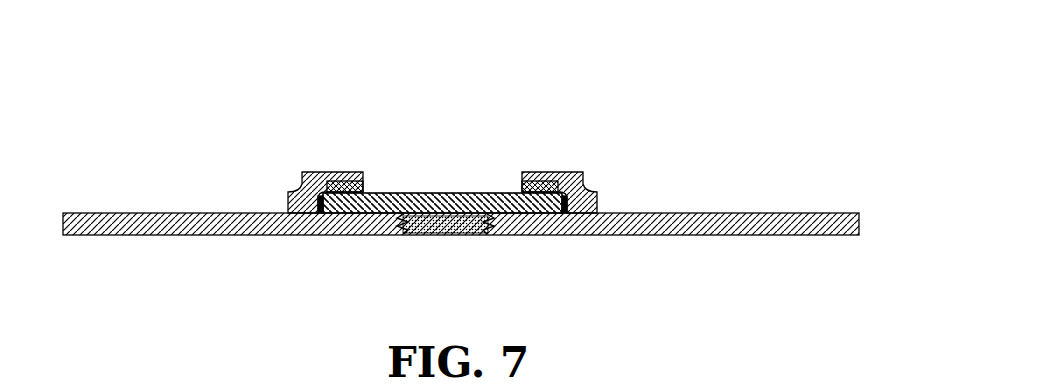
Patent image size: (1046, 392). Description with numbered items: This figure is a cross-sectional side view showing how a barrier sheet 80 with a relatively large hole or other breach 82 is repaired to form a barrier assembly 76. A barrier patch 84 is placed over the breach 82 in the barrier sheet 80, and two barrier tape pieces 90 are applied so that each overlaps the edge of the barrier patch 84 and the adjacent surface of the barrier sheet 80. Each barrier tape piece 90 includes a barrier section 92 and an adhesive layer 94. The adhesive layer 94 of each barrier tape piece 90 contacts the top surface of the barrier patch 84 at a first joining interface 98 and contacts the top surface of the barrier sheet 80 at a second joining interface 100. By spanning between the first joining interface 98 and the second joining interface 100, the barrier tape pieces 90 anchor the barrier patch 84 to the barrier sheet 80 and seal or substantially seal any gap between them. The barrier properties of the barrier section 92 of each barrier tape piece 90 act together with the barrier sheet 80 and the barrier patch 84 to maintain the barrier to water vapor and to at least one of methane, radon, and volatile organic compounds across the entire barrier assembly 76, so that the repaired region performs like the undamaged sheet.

The barrier assembly 76 is at (728, 87).
The barrier sheet 80 is at (187, 222).
The hole or other breach 82 is at (443, 227).
The barrier patch 84 is at (462, 190).
The barrier tape piece 90 is at (365, 158).
The barrier section 92 is at (303, 176).
The adhesive layer 94 is at (320, 213).
The first joining interface 98 is at (335, 186).
The second joining interface 100 is at (295, 218).